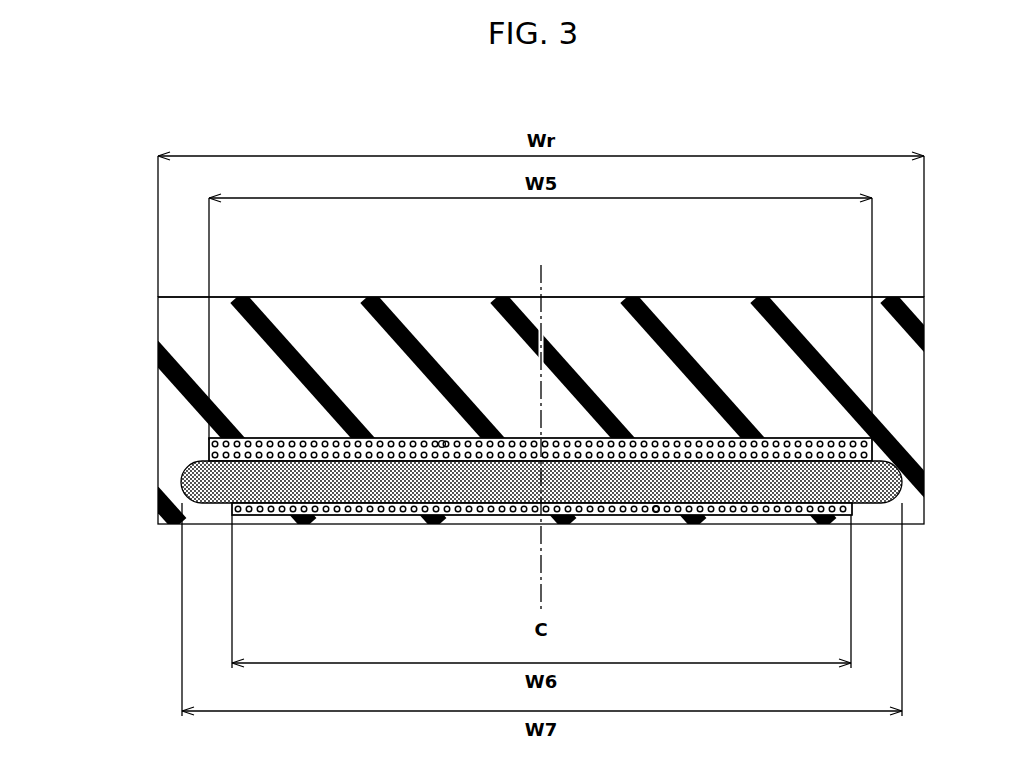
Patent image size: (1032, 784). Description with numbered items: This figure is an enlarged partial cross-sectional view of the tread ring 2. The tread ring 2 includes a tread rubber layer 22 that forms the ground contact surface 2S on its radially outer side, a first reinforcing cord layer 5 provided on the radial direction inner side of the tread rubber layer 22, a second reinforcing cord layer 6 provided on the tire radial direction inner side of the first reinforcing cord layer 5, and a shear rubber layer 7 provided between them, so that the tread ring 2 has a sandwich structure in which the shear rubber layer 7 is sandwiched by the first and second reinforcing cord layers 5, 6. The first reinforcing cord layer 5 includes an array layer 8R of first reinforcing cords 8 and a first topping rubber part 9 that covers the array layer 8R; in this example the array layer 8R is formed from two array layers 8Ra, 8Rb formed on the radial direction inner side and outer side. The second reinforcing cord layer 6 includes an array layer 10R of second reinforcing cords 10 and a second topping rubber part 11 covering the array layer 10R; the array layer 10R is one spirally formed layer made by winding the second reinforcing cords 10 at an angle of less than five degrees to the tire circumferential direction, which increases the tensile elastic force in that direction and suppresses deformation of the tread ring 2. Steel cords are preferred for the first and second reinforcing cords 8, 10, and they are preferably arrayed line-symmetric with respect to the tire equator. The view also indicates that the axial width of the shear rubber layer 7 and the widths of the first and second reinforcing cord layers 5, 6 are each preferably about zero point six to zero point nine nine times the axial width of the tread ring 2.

The tread ring 2 is at (958, 297).
The ground contact surface 2S is at (713, 297).
The first reinforcing cord layer 5 is at (827, 440).
The second reinforcing cord layer 6 is at (782, 514).
The shear rubber layer 7 is at (398, 488).
The first reinforcing cords 8 is at (402, 445).
The array layer 8R is at (539, 330).
The array layer 8Ra is at (307, 457).
The array layer 8Rb is at (293, 445).
The first topping rubber part 9 is at (442, 441).
The second reinforcing cords 10 is at (600, 512).
The array layer 10R is at (755, 512).
The second topping rubber part 11 is at (658, 513).
The tread rubber layer 22 is at (185, 333).